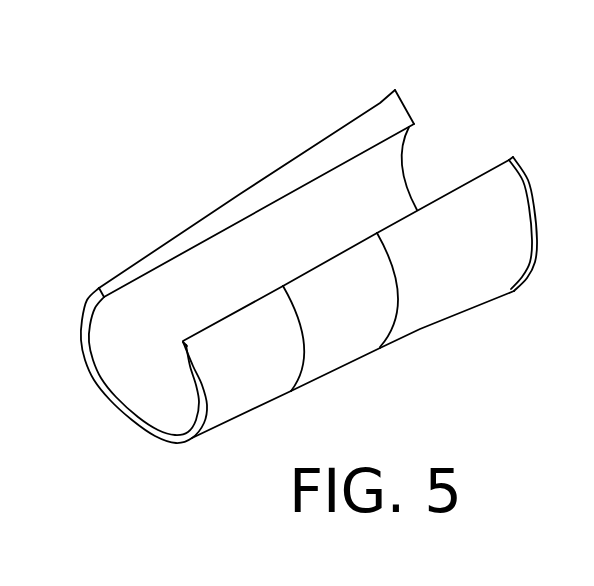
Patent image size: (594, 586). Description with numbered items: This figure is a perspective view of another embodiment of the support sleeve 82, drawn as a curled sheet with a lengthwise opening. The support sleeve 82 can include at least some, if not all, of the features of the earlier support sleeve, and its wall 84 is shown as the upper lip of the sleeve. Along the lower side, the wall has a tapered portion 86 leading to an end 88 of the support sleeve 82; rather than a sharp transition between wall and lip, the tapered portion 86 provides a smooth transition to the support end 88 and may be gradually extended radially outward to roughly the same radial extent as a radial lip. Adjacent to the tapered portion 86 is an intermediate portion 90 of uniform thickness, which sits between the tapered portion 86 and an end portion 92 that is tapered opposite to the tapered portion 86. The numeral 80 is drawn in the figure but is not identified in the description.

The clip sleeve body 80 is at (238, 232).
The support sleeve 82 is at (202, 178).
The wall 84 is at (383, 125).
The tapered portion 86 is at (472, 295).
The end 88 is at (536, 213).
The intermediate portion 90 is at (352, 340).
The end portion 92 is at (261, 386).